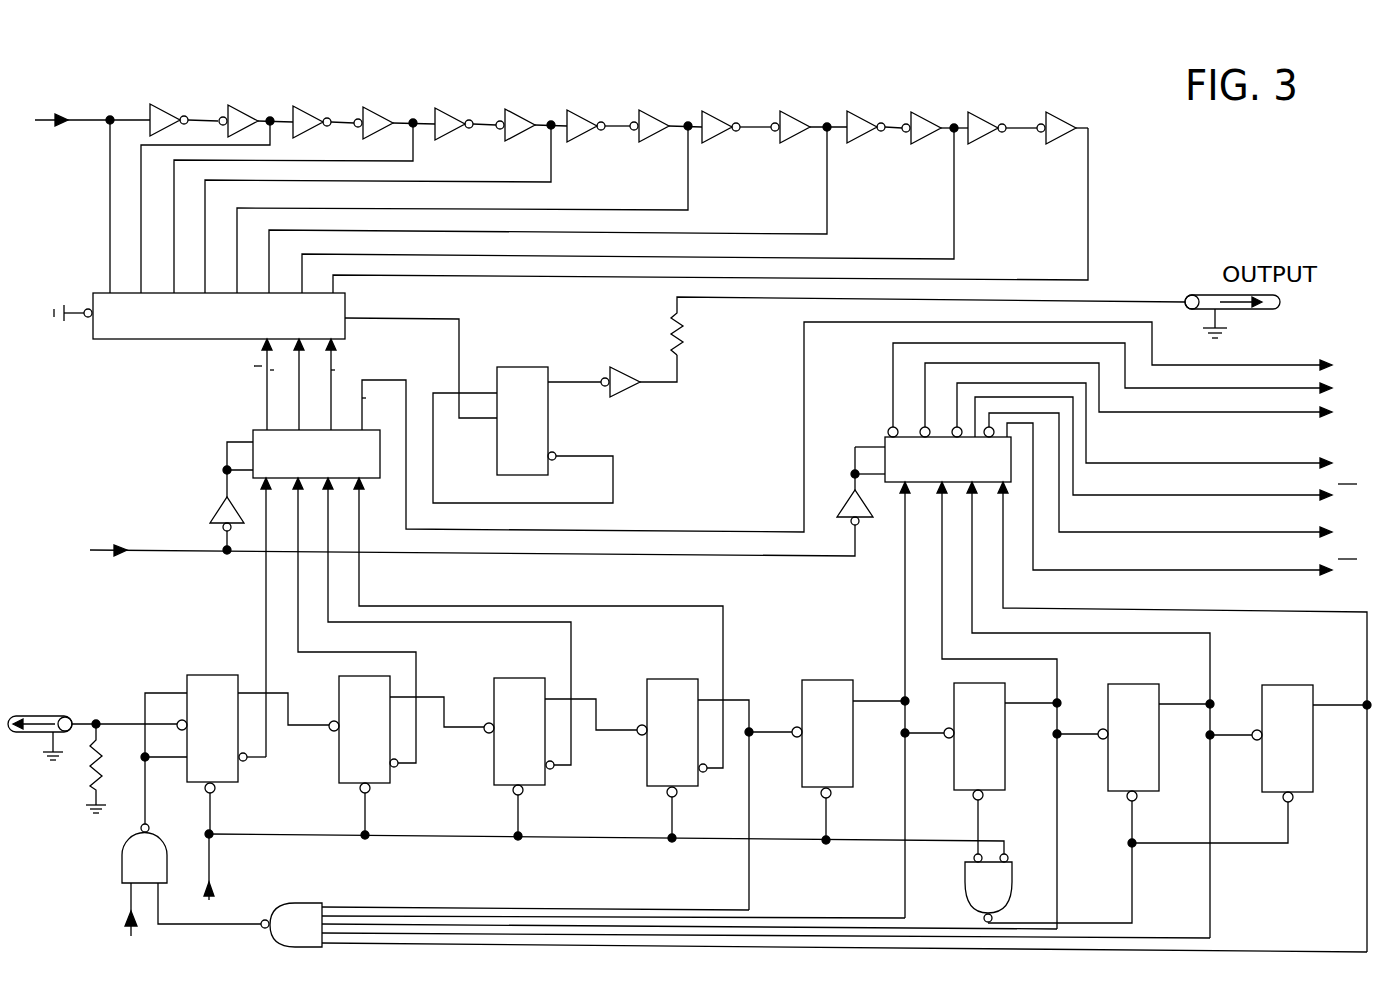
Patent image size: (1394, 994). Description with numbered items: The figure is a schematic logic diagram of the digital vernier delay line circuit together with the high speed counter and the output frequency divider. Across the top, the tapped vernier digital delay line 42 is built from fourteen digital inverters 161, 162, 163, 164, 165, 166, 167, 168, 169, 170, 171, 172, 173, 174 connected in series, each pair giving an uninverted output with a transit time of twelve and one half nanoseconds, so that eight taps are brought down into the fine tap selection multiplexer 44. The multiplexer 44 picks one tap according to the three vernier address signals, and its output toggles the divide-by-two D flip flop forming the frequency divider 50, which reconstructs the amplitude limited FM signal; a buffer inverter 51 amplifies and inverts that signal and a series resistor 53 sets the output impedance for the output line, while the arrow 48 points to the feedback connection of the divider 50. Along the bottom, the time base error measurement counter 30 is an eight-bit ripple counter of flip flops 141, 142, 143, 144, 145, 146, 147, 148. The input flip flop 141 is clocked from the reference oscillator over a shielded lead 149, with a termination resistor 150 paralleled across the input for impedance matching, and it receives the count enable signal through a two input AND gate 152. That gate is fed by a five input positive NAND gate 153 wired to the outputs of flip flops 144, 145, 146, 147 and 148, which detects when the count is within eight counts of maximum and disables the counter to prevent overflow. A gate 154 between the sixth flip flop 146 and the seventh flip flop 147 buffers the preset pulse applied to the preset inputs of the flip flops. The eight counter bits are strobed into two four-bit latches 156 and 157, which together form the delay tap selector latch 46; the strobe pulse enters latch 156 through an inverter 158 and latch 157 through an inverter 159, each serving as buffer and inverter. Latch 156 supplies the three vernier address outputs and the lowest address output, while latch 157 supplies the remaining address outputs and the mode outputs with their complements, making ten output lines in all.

The time base error measurement counter 30 is at (186, 647).
The vernier digital delay line 42 is at (262, 66).
The fine tap selection multiplexer 44 is at (228, 330).
The delay tap selector latch 46 is at (178, 402).
The feedback loop 48 is at (617, 431).
The frequency divider 50 is at (537, 396).
The buffer inverter 51 is at (614, 366).
The series resistor 53 is at (684, 332).
The input flip flop 141 is at (232, 704).
The flip flop 142 is at (384, 705).
The flip flop 143 is at (539, 707).
The flip flop 144 is at (692, 708).
The flip flop 145 is at (847, 709).
The sixth flip flop 146 is at (999, 712).
The seventh flip flop 147 is at (1153, 713).
The flip flop 148 is at (1307, 714).
The shielded lead 149 is at (30, 735).
The termination resistor 150 is at (93, 780).
The two input AND gate 152 is at (124, 884).
The five input positive NAND gate 153 is at (275, 938).
The gate 154 is at (966, 874).
The latch 156 is at (338, 467).
The latch 157 is at (970, 472).
The inverter 158 is at (220, 498).
The inverter 159 is at (850, 497).
The digital inverter 161 is at (160, 78).
The digital inverter 162 is at (238, 79).
The digital inverter 163 is at (303, 80).
The digital inverter 164 is at (373, 81).
The digital inverter 165 is at (445, 82).
The digital inverter 166 is at (515, 83).
The digital inverter 167 is at (577, 83).
The digital inverter 168 is at (649, 83).
The digital inverter 169 is at (712, 84).
The digital inverter 170 is at (790, 84).
The digital inverter 171 is at (857, 84).
The digital inverter 172 is at (921, 85).
The digital inverter 173 is at (978, 85).
The digital inverter 174 is at (1056, 85).